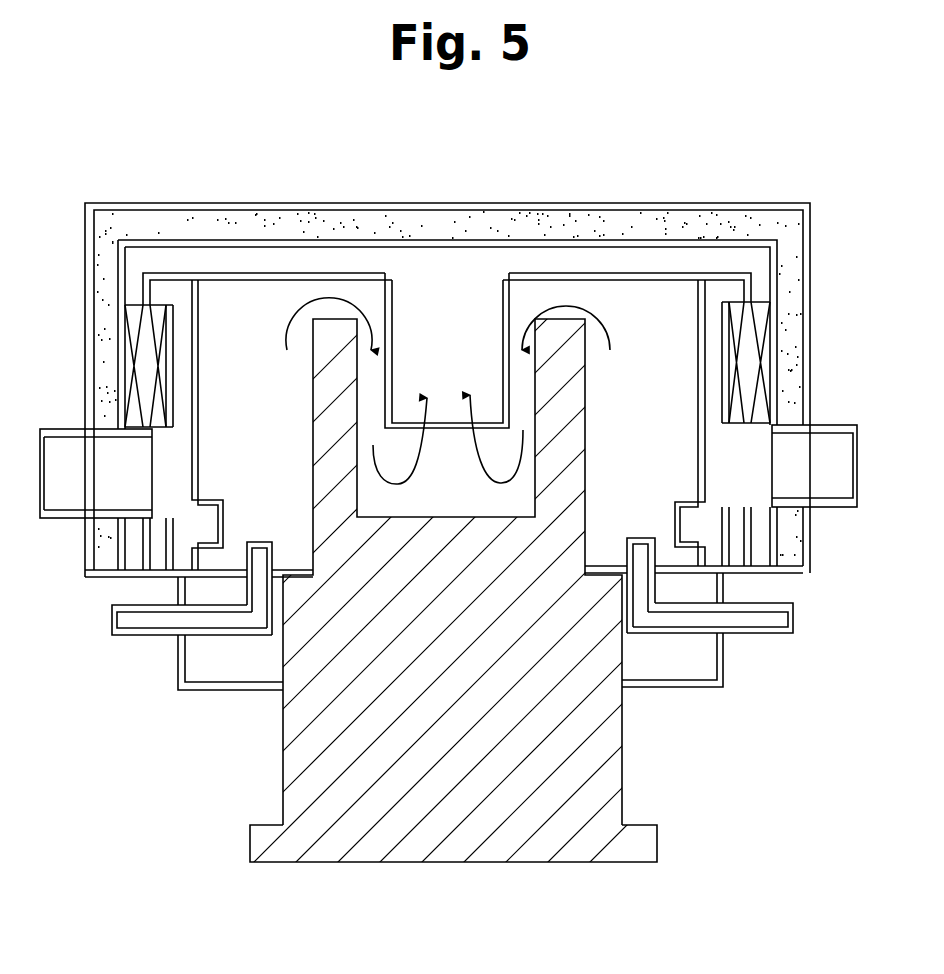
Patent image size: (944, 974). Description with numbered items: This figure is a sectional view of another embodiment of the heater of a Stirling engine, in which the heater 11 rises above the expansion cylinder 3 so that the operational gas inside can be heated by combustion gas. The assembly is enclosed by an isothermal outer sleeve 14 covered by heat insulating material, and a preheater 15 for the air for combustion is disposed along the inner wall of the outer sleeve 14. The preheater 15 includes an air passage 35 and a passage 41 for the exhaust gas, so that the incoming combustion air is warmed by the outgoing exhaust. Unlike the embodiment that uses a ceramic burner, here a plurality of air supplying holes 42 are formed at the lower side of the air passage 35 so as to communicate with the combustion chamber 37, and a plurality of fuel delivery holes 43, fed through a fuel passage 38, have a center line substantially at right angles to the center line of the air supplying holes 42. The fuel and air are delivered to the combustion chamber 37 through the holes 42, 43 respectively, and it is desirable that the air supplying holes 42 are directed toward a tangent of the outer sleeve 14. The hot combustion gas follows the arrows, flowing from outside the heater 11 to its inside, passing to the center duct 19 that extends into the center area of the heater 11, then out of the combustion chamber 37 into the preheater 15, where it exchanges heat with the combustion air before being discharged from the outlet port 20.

The expansion cylinder 3 is at (470, 833).
The heater 11 is at (567, 408).
The outer sleeve 14 is at (356, 225).
The preheater 15 is at (140, 340).
The center duct 19 is at (503, 333).
The outlet port 20 is at (835, 508).
The air passage 35 is at (712, 328).
The combustion chamber 37 is at (266, 381).
The fuel passage 38 is at (142, 637).
The exhaust gas passage 41 is at (758, 288).
The air supplying holes 42 is at (680, 522).
The fuel delivery holes 43 is at (258, 545).